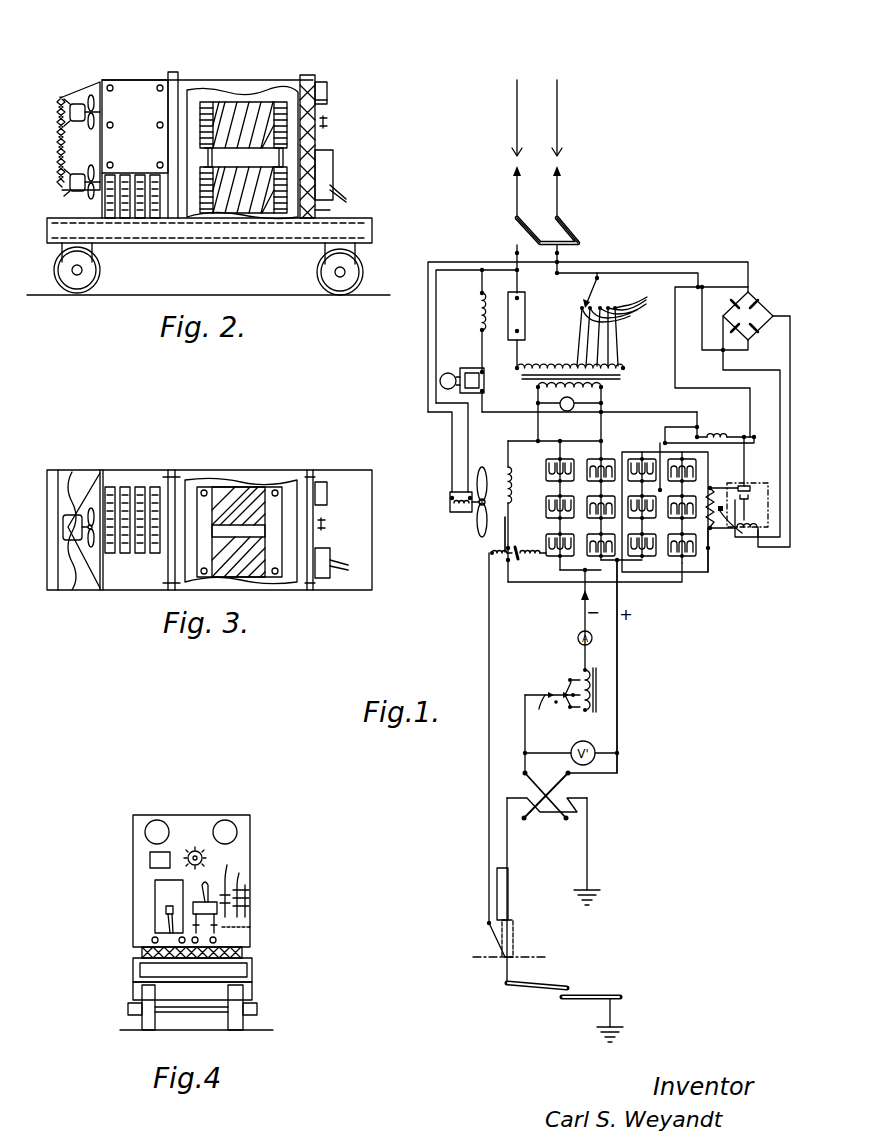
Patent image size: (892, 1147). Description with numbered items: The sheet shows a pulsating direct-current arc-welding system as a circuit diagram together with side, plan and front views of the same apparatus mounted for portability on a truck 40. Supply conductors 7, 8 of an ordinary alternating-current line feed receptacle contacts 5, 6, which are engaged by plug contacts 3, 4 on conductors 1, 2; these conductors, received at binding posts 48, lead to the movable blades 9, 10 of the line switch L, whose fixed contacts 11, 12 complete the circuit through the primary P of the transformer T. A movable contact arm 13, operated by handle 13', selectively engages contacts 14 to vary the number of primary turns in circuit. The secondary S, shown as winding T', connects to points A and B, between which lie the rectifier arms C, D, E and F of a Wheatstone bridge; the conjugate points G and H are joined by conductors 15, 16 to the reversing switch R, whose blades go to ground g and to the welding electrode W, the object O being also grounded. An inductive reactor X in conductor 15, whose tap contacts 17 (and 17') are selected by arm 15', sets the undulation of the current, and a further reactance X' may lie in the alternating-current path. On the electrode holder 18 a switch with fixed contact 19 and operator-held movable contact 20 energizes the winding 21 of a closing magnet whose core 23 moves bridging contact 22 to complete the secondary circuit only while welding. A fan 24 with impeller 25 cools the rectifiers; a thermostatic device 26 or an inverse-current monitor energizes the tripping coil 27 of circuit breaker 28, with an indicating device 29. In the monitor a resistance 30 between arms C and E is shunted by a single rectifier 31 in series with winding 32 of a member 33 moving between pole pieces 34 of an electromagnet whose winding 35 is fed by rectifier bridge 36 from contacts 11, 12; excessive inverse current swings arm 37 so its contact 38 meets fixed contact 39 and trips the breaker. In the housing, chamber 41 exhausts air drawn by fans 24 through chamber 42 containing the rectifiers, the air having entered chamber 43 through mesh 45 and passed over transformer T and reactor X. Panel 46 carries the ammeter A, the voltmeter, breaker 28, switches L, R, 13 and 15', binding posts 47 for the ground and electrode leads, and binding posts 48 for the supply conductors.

In FIG. 1, the conductor 1 is at (516, 200).
In FIG. 1, the conductor 2 is at (558, 200).
In FIG. 1, the plug contact 3 is at (512, 175).
In FIG. 1, the plug contact 4 is at (562, 175).
In FIG. 1, the receptacle contact 5 is at (511, 155).
In FIG. 1, the receptacle contact 6 is at (560, 155).
In FIG. 1, the supply conductor 7 is at (516, 108).
In FIG. 1, the supply conductor 8 is at (558, 108).
In FIG. 1, the movable contact or blade 9 is at (519, 230).
In FIG. 1, the movable contact or blade 10 is at (568, 238).
In FIG. 1, the fixed contact 11 is at (513, 251).
In FIG. 2, the fixed contact 11 is at (52, 137).
In FIG. 1, the fixed contact 12 is at (563, 255).
In FIG. 1, the movable contact arm 13 is at (613, 290).
In FIG. 1, the contacts 14 is at (619, 331).
In FIG. 1, the conductor 15 is at (547, 710).
In FIG. 1, the contact arm 15' is at (537, 714).
In FIG. 4, the contact arm 15' is at (271, 873).
In FIG. 1, the conductor 16 is at (618, 718).
In FIG. 1, the contacts 17 is at (575, 691).
In FIG. 1, the contact 17' is at (553, 722).
In FIG. 1, the electrode holder 18 is at (517, 950).
In FIG. 1, the fixed contact 19 is at (509, 910).
In FIG. 1, the movable contact 20 is at (486, 927).
In FIG. 1, the winding of closing magnet 21 is at (489, 558).
In FIG. 1, the bridging contact 22 is at (518, 550).
In FIG. 1, the core 23 is at (492, 553).
In FIG. 1, the cooling fan 24 is at (450, 502).
In FIG. 2, the cooling fan 24 is at (72, 104).
In FIG. 3, the cooling fan 24 is at (64, 528).
In FIG. 1, the impeller 25 is at (484, 484).
In FIG. 1, the thermostatic device 26 is at (696, 478).
In FIG. 1, the tripping coil 27 is at (479, 306).
In FIG. 1, the circuit breaker 28 is at (525, 311).
In FIG. 4, the circuit breaker 28 is at (155, 894).
In FIG. 1, the signal or indicating device 29 is at (466, 368).
In FIG. 1, the resistance 30 is at (708, 550).
In FIG. 1, the rectifier element 31 is at (740, 533).
In FIG. 1, the winding 32 is at (754, 488).
In FIG. 1, the movable member 33 is at (725, 496).
In FIG. 1, the pole pieces 34 is at (745, 503).
In FIG. 1, the electromagnet winding 35 is at (734, 535).
In FIG. 1, the rectifier bridge 36 is at (757, 312).
In FIG. 1, the arm 37 is at (757, 439).
In FIG. 1, the contact 38 is at (746, 435).
In FIG. 1, the fixed contact 39 is at (754, 437).
In FIG. 2, the truck 40 is at (373, 237).
In FIG. 3, the truck 40 is at (350, 559).
In FIG. 2, the chamber 41 is at (84, 94).
In FIG. 3, the chamber 41 is at (58, 478).
In FIG. 2, the chamber 42 is at (160, 80).
In FIG. 2, the chamber 43 is at (258, 78).
In FIG. 3, the chamber 43 is at (258, 480).
In FIG. 2, the grill work or mesh 45 is at (312, 78).
In FIG. 2, the panel 46 is at (327, 82).
In FIG. 3, the panel 46 is at (311, 476).
In FIG. 4, the panel 46 is at (139, 815).
In FIG. 4, the binding posts 47 is at (152, 940).
In FIG. 4, the binding posts 48 is at (213, 940).
In FIG. 4, the operating handle 13' is at (203, 819).
In FIG. 1, the line switch L is at (572, 244).
In FIG. 4, the line switch L is at (206, 882).
In FIG. 1, the primary P is at (587, 356).
In FIG. 1, the secondary S is at (537, 402).
In FIG. 2, the transformer T is at (263, 121).
In FIG. 3, the transformer T is at (239, 510).
In FIG. 1, the secondary winding T' is at (593, 392).
In FIG. 1, the point A is at (603, 442).
In FIG. 1, the inductive reactor X is at (621, 690).
In FIG. 2, the inductive reactor X is at (278, 246).
In FIG. 1, the inductive reactance X' is at (524, 511).
In FIG. 1, the bridge arm C is at (555, 496).
In FIG. 1, the bridge arm D is at (600, 494).
In FIG. 1, the bridge arm E is at (681, 507).
In FIG. 1, the bridge arm F is at (642, 507).
In FIG. 1, the conjugate point G is at (581, 580).
In FIG. 1, the conjugate point H is at (619, 562).
In FIG. 1, the point B is at (680, 582).
In FIG. 1, the reversing switch R is at (536, 766).
In FIG. 4, the reversing switch R is at (249, 880).
In FIG. 1, the object being welded O is at (592, 994).
In FIG. 1, the welding electrode W is at (548, 993).
In FIG. 1, the ground g is at (588, 890).